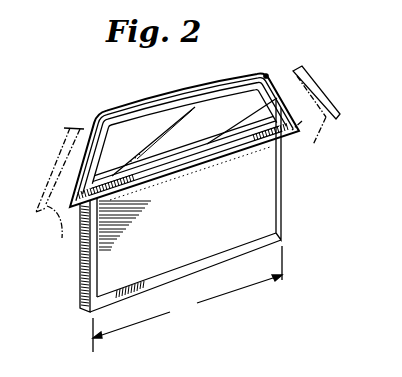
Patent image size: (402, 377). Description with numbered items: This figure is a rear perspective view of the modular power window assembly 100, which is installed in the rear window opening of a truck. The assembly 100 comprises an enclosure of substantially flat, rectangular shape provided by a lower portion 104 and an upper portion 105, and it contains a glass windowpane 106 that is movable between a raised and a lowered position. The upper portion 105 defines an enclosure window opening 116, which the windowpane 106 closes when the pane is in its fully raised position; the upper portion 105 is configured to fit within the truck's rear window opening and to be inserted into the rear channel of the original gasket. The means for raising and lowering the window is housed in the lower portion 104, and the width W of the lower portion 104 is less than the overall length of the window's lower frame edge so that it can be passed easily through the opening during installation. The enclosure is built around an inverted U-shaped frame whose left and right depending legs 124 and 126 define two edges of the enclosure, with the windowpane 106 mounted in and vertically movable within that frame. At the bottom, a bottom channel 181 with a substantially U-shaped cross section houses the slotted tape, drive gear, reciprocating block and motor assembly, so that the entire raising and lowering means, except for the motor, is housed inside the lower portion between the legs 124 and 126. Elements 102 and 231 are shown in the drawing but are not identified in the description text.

The modular power window assembly 100 is at (92, 104).
The mounting tabs 102 is at (297, 131).
The lower portion 104 is at (258, 201).
The upper portion 105 is at (268, 70).
The glass windowpane 106 is at (213, 112).
The enclosure window opening 116 is at (155, 124).
The left depending leg 124 is at (92, 289).
The right depending leg 126 is at (278, 224).
The bottom channel 181 is at (254, 250).
The hatched surface 231 is at (98, 268).